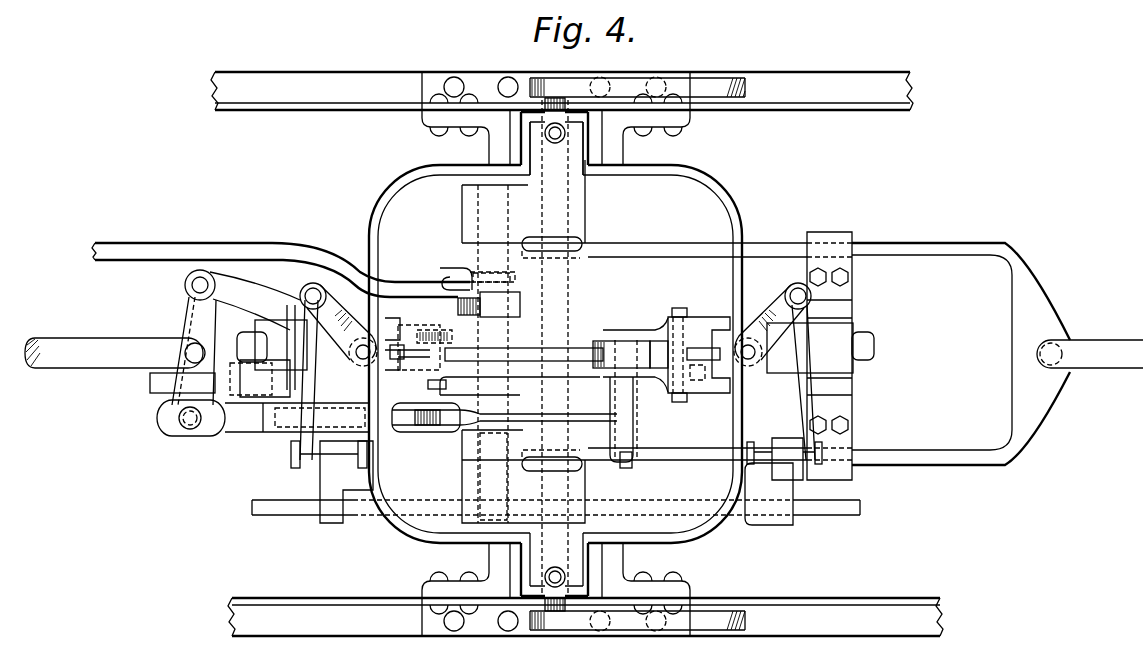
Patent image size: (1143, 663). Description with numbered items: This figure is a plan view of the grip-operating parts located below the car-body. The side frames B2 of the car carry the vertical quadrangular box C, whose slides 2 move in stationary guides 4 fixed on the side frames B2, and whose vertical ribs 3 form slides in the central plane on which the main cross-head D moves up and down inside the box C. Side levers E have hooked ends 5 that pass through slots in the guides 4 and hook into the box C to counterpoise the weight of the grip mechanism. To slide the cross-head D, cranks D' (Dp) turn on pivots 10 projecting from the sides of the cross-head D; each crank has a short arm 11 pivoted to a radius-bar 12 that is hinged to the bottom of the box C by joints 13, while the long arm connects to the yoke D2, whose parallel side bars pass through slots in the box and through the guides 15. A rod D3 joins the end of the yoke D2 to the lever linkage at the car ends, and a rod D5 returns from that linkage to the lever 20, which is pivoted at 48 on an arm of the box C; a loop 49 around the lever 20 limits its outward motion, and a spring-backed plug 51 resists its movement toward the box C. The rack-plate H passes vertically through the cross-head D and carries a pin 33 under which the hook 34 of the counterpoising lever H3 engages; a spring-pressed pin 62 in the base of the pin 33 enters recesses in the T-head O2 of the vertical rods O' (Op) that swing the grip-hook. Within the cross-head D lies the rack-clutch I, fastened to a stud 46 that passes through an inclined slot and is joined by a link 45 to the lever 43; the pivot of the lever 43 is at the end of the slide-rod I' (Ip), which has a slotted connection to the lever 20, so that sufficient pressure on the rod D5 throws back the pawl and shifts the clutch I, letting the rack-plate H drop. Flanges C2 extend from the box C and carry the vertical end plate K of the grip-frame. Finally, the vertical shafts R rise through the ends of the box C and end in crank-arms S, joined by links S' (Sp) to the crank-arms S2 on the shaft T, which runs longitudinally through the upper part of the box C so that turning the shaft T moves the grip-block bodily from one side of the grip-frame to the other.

The slides 2 is at (497, 153).
The stationary guides 4 is at (629, 147).
The hooked ends 5 is at (555, 354).
The pivots 10 is at (567, 245).
The short arm 11 is at (462, 258).
The radius-bar 12 is at (462, 208).
The joints 13 is at (572, 150).
The guides 15 is at (848, 473).
The lever 20 is at (194, 351).
The vertical ribs 3 is at (555, 357).
The pin 33 is at (455, 281).
The hook 34 is at (458, 308).
The lever 43 is at (422, 427).
The link 45 is at (478, 412).
The stud 46 is at (628, 470).
The pivot 48 is at (192, 284).
The loop 49 is at (158, 380).
The plug 51 is at (228, 360).
The pin 62 is at (425, 335).
The side frames B2 is at (577, 354).
The vertical quadrangular box C is at (713, 203).
The flanges C2 is at (884, 346).
The main cross-head D is at (712, 308).
The cranks Dp is at (590, 270).
The yoke D2 is at (961, 350).
The rod D3 is at (1090, 353).
The rod D5 is at (115, 353).
The side levers E is at (575, 94).
The rack-plate H is at (505, 355).
The lever H3 is at (281, 255).
The rack-clutch I is at (630, 354).
The slide-rod Ip is at (233, 430).
The vertical end plate K is at (264, 350).
The T-head O2 is at (700, 340).
The vertical rods Op is at (420, 368).
The vertical shafts R is at (363, 362).
The crank-arms S is at (760, 316).
The links Sp is at (313, 392).
The crank-arms S2 is at (784, 433).
The shaft T is at (702, 492).